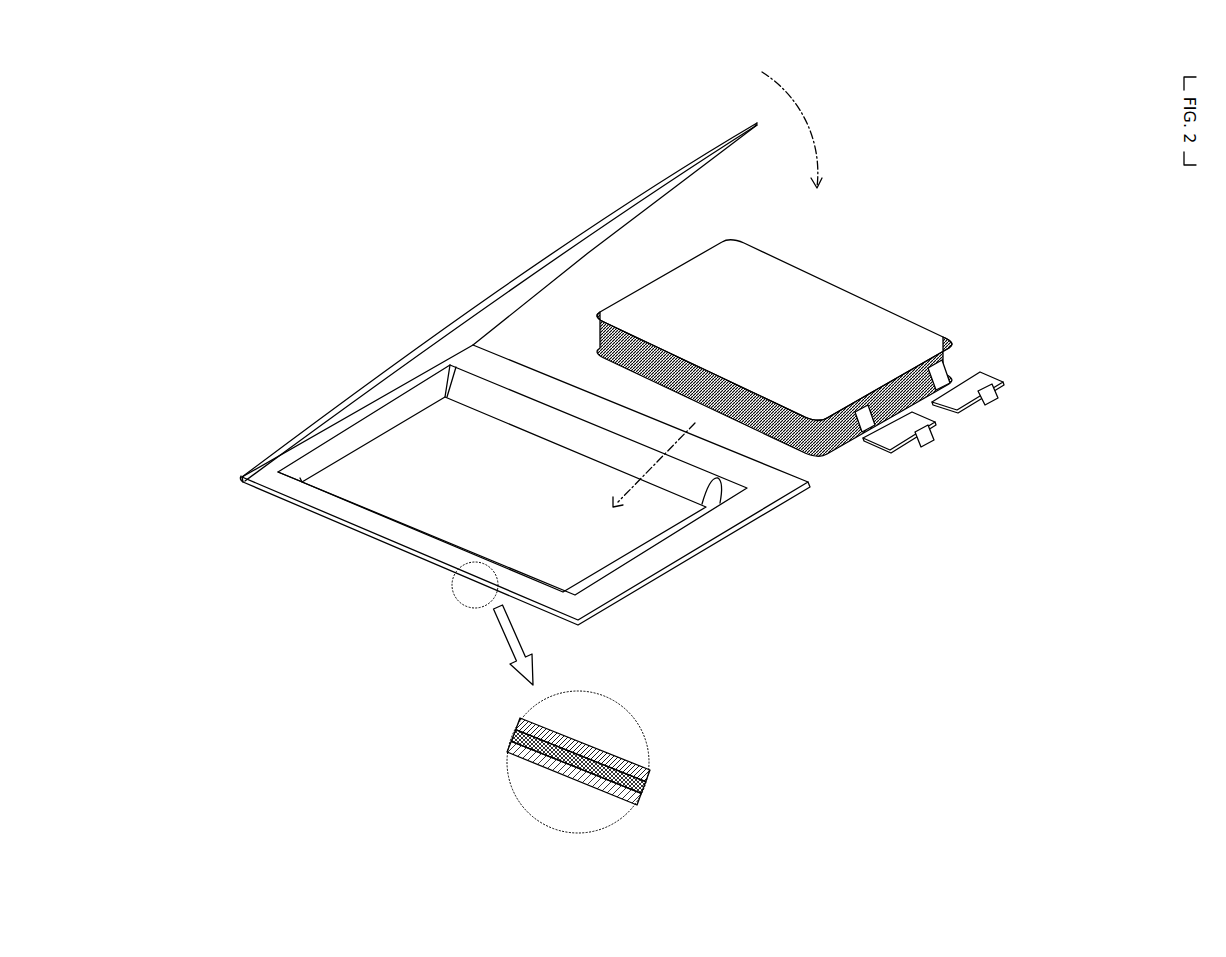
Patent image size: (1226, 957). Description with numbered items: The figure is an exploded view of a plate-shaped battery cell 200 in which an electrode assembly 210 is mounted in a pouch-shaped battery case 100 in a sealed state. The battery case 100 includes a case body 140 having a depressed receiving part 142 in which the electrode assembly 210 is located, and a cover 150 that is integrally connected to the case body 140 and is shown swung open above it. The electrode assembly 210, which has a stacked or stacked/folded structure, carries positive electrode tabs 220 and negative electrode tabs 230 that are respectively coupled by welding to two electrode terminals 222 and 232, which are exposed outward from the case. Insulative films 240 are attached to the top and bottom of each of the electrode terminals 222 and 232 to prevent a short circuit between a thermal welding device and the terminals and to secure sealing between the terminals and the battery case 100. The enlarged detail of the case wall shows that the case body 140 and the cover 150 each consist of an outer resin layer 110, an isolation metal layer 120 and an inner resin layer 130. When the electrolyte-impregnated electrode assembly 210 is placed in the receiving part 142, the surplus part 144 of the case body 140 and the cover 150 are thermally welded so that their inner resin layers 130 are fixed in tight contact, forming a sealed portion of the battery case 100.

The battery cell 200 is at (262, 103).
The battery case 100 is at (343, 343).
The cover 150 is at (555, 242).
The case body 140 is at (405, 553).
The receiving part 142 is at (368, 497).
The surplus part 144 is at (668, 555).
The outer resin layer 110 is at (650, 772).
The isolation metal layer 120 is at (648, 785).
The inner resin layer 130 is at (642, 797).
The electrode assembly 210 is at (855, 308).
The positive electrode tabs 220 is at (863, 428).
The electrode terminal 222 is at (922, 450).
The negative electrode tabs 230 is at (942, 366).
The electrode terminal 232 is at (1003, 393).
The insulative films 240 is at (930, 440).